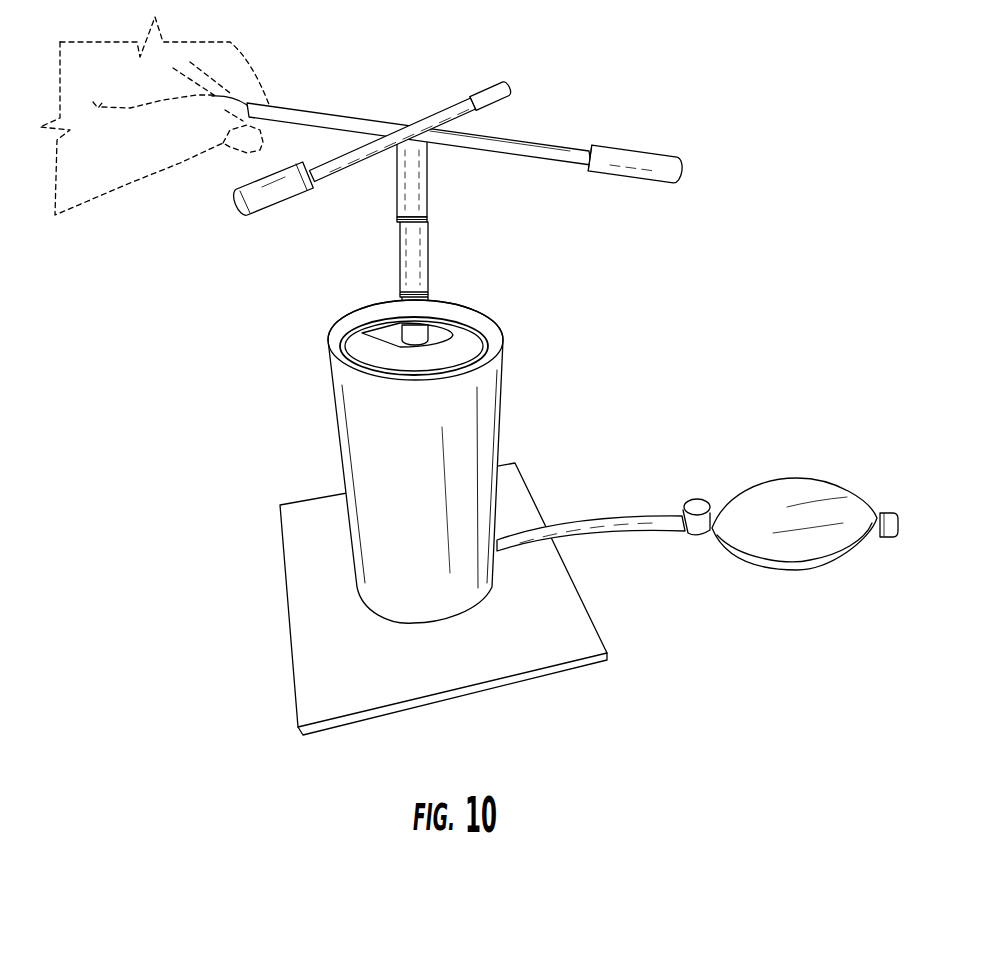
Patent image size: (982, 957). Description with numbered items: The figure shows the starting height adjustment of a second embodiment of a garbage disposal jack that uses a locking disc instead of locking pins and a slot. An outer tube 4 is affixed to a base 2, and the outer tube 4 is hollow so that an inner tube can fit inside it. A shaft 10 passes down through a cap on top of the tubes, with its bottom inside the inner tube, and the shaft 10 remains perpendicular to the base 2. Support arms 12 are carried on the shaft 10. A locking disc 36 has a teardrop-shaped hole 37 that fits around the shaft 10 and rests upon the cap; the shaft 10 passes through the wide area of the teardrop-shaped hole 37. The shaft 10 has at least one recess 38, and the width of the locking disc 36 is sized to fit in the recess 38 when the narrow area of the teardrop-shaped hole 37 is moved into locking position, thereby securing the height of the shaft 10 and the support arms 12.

The base 2 is at (585, 623).
The outer tube 4 is at (492, 422).
The shaft 10 is at (403, 203).
The support arms 12 is at (443, 100).
The locking disc 36 is at (347, 338).
The teardrop-shaped hole 37 is at (373, 330).
The recess 38 is at (428, 294).